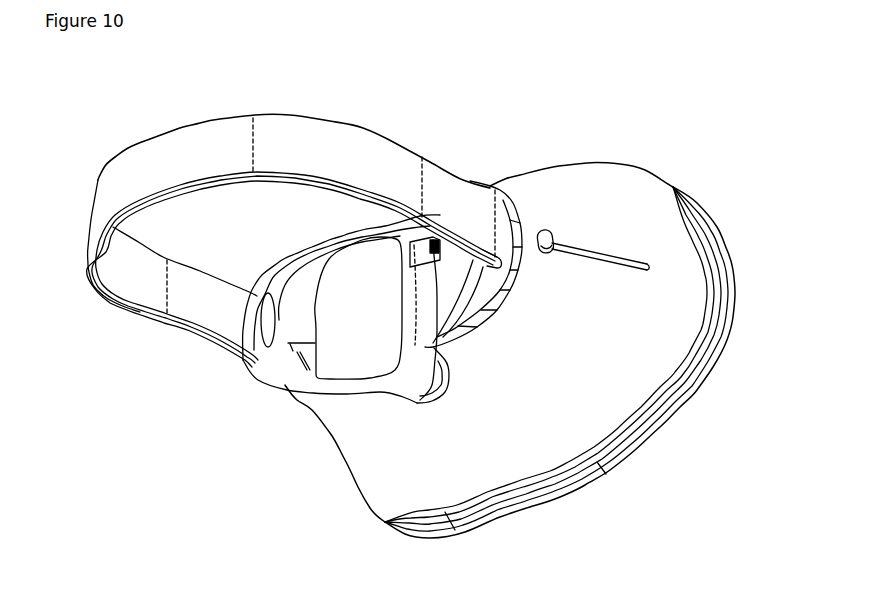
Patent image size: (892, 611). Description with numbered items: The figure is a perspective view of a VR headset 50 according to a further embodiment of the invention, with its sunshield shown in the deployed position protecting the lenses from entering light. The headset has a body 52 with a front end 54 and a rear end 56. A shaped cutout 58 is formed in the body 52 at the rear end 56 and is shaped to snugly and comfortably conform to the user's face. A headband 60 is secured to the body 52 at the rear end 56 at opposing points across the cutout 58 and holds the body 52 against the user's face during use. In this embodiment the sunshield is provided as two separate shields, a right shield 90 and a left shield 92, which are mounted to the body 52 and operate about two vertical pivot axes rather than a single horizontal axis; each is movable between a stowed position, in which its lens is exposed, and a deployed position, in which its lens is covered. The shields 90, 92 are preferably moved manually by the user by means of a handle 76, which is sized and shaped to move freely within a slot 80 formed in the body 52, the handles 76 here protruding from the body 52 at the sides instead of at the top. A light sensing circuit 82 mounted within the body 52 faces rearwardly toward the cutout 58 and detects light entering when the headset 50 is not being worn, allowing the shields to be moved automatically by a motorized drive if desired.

The VR headset 50 is at (656, 85).
The body 52 is at (633, 390).
The front end 54 is at (540, 497).
The rear end 56 is at (280, 378).
The shaped cutout 58 is at (404, 406).
The headband 60 is at (130, 167).
The handle 76 is at (547, 254).
The slot 80 is at (592, 252).
The light sensing circuit 82 is at (425, 247).
The right shield 90 is at (450, 297).
The left shield 92 is at (362, 330).